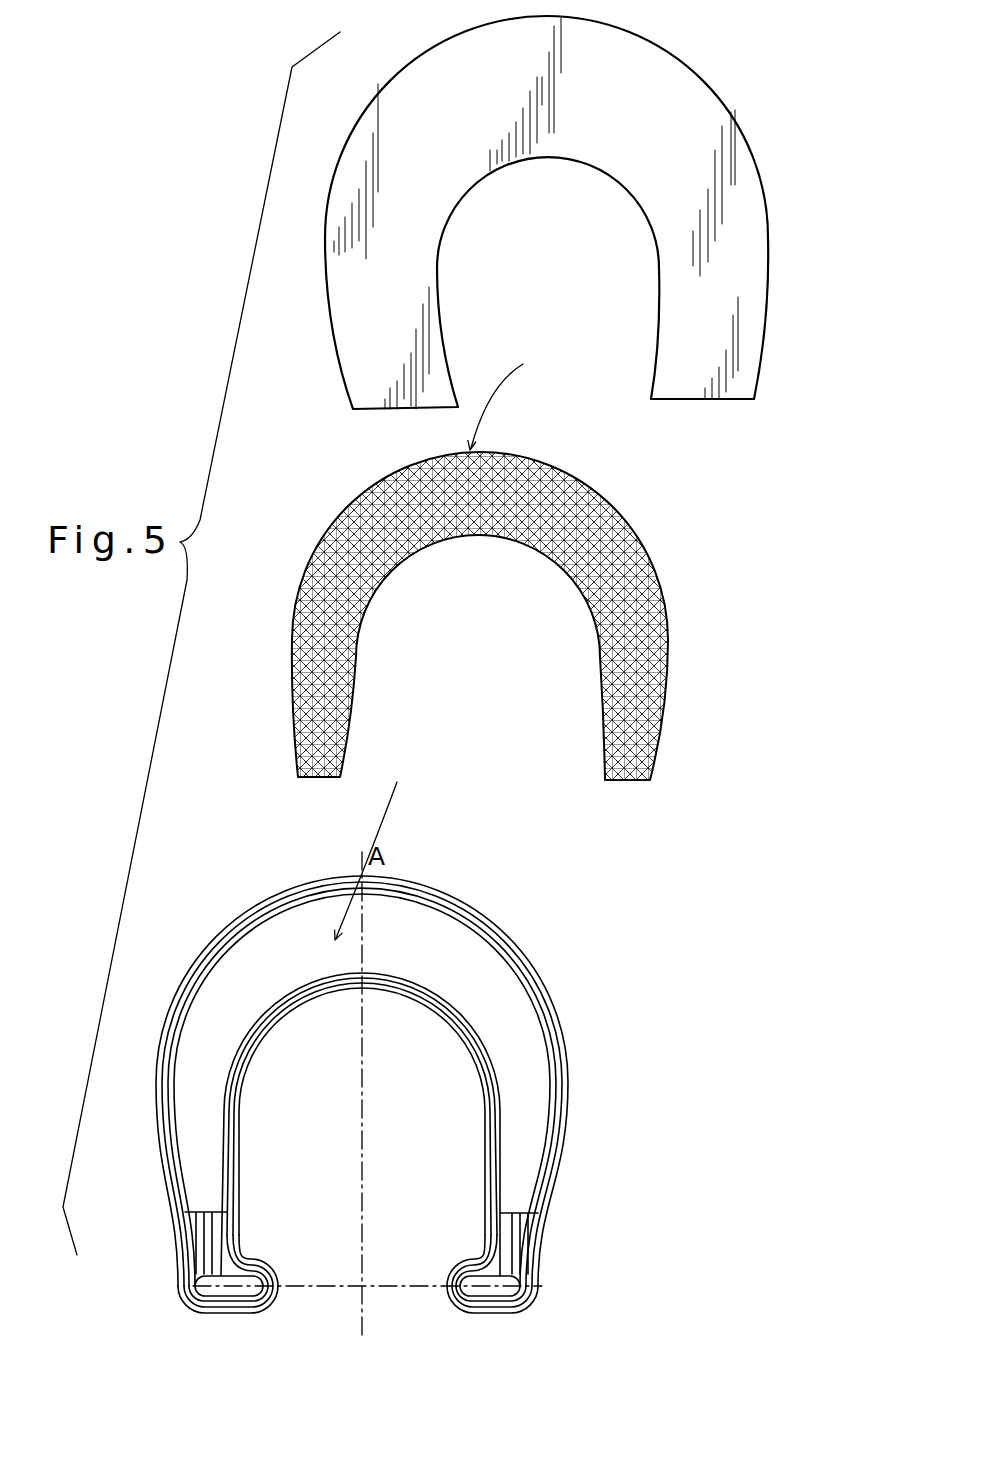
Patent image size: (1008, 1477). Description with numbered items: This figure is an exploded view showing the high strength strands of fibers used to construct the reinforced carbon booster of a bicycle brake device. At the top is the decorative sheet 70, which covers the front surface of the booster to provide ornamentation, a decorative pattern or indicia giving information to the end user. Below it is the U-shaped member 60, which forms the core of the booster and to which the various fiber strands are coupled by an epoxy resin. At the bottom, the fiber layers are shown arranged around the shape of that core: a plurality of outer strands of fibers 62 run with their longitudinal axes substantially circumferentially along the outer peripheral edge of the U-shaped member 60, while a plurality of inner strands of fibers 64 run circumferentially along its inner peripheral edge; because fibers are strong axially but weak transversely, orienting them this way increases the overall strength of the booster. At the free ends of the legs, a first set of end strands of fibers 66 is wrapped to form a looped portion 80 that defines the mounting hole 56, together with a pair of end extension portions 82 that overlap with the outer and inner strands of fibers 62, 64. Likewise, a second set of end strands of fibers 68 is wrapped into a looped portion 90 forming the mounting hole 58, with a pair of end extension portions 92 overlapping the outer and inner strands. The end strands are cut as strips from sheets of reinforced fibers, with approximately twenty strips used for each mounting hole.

The mounting hole 56 is at (218, 1273).
The mounting hole 58 is at (522, 1268).
The U-shaped member 60 is at (665, 553).
The outer strands of fibers 62 is at (517, 932).
The inner strands of fibers 64 is at (447, 1024).
The first set of end strands of fibers 66 is at (176, 1293).
The second set of end strands of fibers 68 is at (542, 1293).
The decorative sheet 70 is at (708, 52).
The looped portion 80 is at (243, 1283).
The end extension portions 82 is at (183, 1278).
The looped portion 90 is at (470, 1270).
The end extension portions 92 is at (538, 1279).